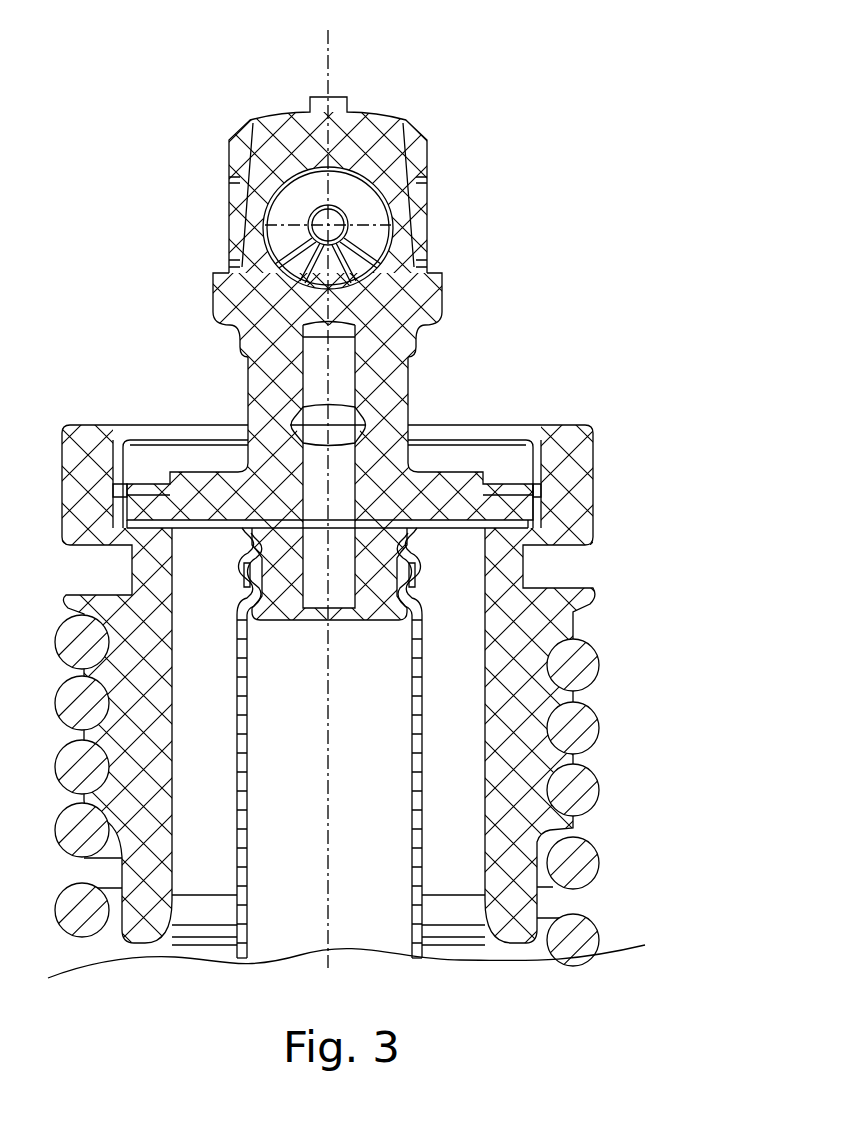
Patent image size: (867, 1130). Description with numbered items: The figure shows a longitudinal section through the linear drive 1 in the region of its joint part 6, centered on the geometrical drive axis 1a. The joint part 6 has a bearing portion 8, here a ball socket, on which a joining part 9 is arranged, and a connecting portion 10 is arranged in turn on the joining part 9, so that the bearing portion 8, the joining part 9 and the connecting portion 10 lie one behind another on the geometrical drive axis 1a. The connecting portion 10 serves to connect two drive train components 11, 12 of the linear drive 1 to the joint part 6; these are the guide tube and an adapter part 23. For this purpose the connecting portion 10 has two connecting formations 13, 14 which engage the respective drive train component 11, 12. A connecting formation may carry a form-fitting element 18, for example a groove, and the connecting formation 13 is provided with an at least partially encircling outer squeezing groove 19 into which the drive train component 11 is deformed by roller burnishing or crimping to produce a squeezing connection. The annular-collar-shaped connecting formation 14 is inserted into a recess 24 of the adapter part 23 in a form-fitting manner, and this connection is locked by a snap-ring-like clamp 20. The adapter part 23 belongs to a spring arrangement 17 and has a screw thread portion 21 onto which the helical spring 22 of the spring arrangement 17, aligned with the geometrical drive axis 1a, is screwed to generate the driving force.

The linear drive 1 is at (570, 140).
The geometrical drive axis 1a is at (335, 46).
The joint part 6 is at (444, 296).
The bearing portion 8 is at (372, 128).
The joining part 9 is at (385, 394).
The connecting portion 10 is at (486, 446).
The drive train component 11 is at (420, 826).
The drive train component 12 is at (575, 462).
The connecting formation 13 is at (383, 568).
The connecting formation 14 is at (516, 505).
The spring arrangement 17 is at (583, 866).
The form-fitting element 18 is at (260, 592).
The outer squeezing groove 19 is at (329, 743).
The clamp 20 is at (130, 485).
The screw thread portion 21 is at (632, 655).
The helical spring 22 is at (327, 790).
The adapter part 23 is at (328, 684).
The recess 24 is at (186, 458).